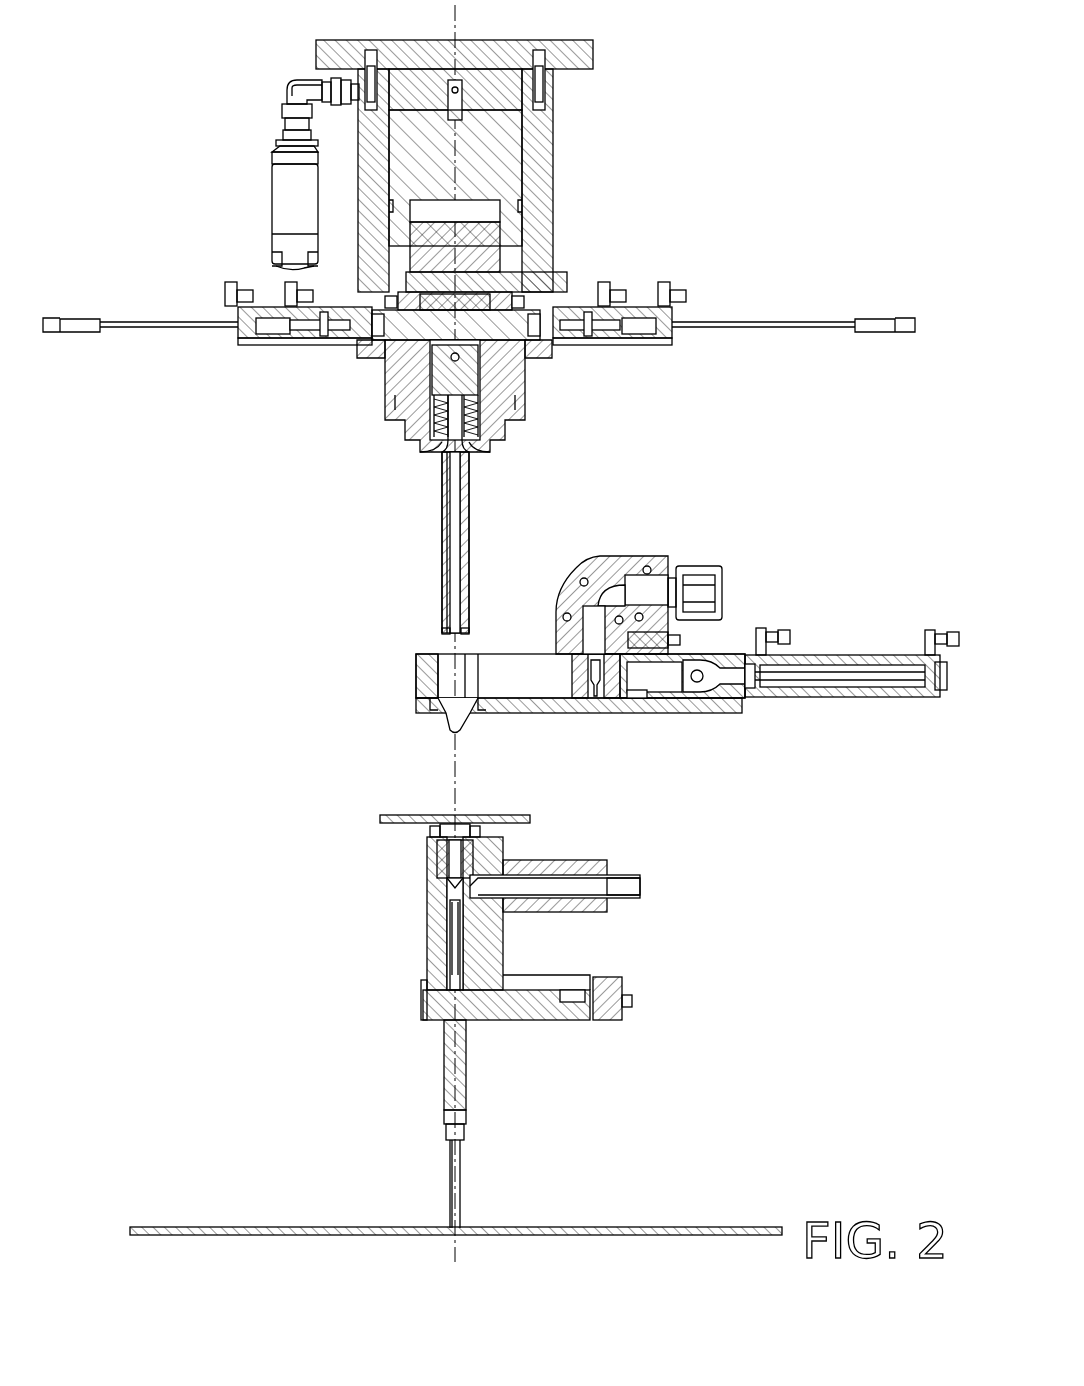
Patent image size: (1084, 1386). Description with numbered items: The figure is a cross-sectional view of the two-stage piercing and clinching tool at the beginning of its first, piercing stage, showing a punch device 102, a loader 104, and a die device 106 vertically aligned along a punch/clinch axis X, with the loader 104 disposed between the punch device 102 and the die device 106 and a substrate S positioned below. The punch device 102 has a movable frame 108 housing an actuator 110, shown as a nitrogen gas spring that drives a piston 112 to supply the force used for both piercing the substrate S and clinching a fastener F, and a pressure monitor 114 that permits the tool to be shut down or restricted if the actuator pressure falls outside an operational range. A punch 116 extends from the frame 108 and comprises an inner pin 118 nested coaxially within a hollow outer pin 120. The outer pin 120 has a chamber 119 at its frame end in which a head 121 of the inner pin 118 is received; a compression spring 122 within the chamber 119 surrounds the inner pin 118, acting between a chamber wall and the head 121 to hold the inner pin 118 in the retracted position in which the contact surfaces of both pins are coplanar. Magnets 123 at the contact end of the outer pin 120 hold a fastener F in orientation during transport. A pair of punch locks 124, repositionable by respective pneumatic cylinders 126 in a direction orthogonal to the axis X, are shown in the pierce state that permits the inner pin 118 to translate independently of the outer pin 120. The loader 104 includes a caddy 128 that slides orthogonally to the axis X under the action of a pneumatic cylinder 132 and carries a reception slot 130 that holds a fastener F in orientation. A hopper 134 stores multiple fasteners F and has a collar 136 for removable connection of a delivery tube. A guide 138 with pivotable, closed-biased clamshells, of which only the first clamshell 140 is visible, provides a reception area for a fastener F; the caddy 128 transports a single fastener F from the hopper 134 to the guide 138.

The punch device 102 is at (645, 146).
The loader 104 is at (797, 540).
The die device 106 is at (368, 916).
The movable frame 108 is at (365, 197).
The actuator 110 is at (510, 157).
The piston 112 is at (498, 255).
The pressure monitor 114 is at (252, 155).
The punch 116 is at (412, 521).
The inner pin 118 is at (457, 508).
The chamber 119 is at (476, 443).
The outer pin 120 is at (442, 576).
The head 121 is at (440, 358).
The spring 122 is at (480, 436).
The magnet 123 is at (410, 627).
The punch lock 124 is at (392, 332).
The pneumatic cylinder 126 is at (268, 360).
The caddy 128 is at (660, 690).
The reception slot 130 is at (582, 702).
The pneumatic cylinder 132 is at (840, 672).
The hopper 134 is at (682, 548).
The collar 136 is at (700, 563).
The guide 138 is at (428, 734).
The first clamshell 140 is at (445, 718).
The punch/clinch axis X is at (458, 12).
The fastener F is at (592, 632).
The substrate S is at (380, 818).